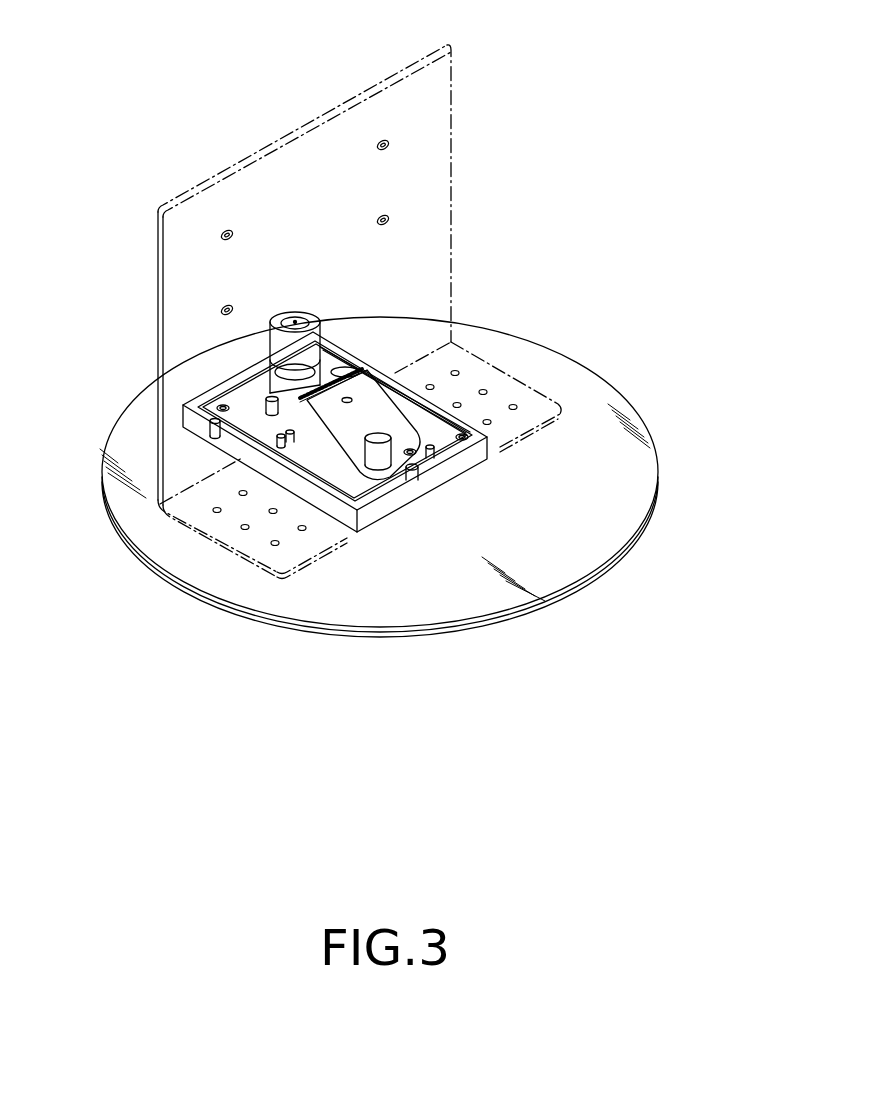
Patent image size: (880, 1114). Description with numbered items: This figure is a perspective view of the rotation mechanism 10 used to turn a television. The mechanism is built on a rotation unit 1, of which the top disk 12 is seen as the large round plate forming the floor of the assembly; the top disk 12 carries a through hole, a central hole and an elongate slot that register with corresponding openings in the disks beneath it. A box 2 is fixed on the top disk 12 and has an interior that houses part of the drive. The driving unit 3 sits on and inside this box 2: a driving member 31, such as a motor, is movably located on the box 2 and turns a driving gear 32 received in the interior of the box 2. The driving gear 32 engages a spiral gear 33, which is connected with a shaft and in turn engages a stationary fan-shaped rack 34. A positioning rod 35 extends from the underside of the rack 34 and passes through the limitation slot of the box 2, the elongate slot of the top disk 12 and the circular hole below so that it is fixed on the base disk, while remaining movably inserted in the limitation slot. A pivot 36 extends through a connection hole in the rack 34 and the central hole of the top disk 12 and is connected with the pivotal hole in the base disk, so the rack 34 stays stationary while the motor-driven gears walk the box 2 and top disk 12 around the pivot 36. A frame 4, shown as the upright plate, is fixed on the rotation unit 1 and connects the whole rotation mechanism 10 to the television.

The rotation unit 1 is at (670, 490).
The top disk 12 is at (607, 403).
The box 2 is at (210, 442).
The driving unit 3 is at (200, 357).
The frame 4 is at (432, 162).
The rotation mechanism 10 is at (527, 207).
The driving member 31 is at (273, 337).
The driving gear 32 is at (266, 403).
The spiral gear 33 is at (367, 370).
The stationary fan-shaped rack 34 is at (370, 413).
The positioning rod 35 is at (390, 392).
The pivot 36 is at (368, 453).